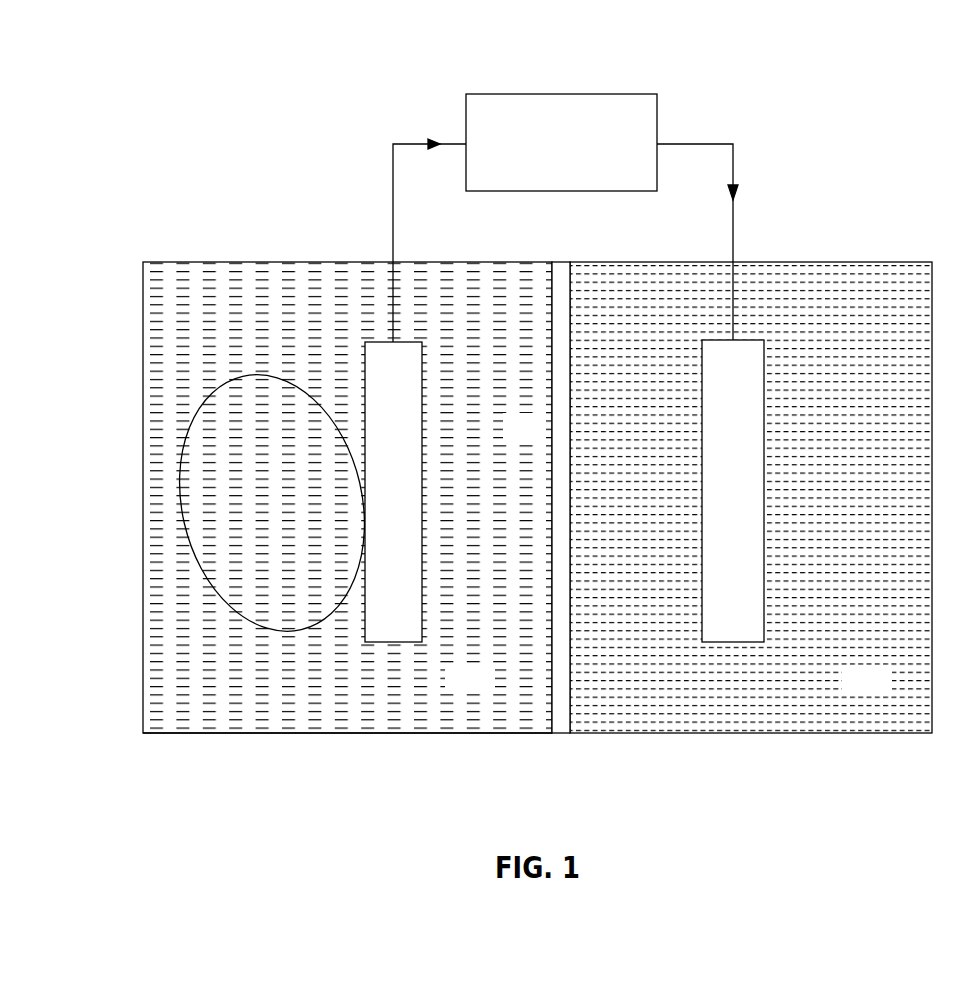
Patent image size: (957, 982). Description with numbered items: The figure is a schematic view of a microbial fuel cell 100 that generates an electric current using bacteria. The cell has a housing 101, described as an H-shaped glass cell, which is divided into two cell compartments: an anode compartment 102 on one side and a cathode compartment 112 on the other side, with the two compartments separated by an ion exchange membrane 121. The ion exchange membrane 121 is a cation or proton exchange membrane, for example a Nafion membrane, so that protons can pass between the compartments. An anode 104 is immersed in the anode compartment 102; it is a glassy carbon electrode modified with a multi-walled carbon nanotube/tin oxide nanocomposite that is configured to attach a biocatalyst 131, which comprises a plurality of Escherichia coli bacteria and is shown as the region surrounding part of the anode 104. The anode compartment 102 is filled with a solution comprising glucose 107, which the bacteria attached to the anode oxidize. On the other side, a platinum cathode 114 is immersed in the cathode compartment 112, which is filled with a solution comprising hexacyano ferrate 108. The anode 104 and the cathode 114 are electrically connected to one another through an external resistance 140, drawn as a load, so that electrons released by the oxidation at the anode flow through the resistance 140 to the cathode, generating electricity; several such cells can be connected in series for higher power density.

The microbial fuel cell 100 is at (170, 122).
The housing 101 is at (227, 262).
The anode compartment 102 is at (347, 497).
The anode 104 is at (386, 388).
The glucose 107 is at (284, 733).
The hexacyano ferrate 108 is at (723, 733).
The cathode compartment 112 is at (751, 497).
The cathode 114 is at (740, 395).
The ion exchange membrane 121 is at (565, 290).
The biocatalyst 131 is at (185, 511).
The resistance 140 is at (490, 115).